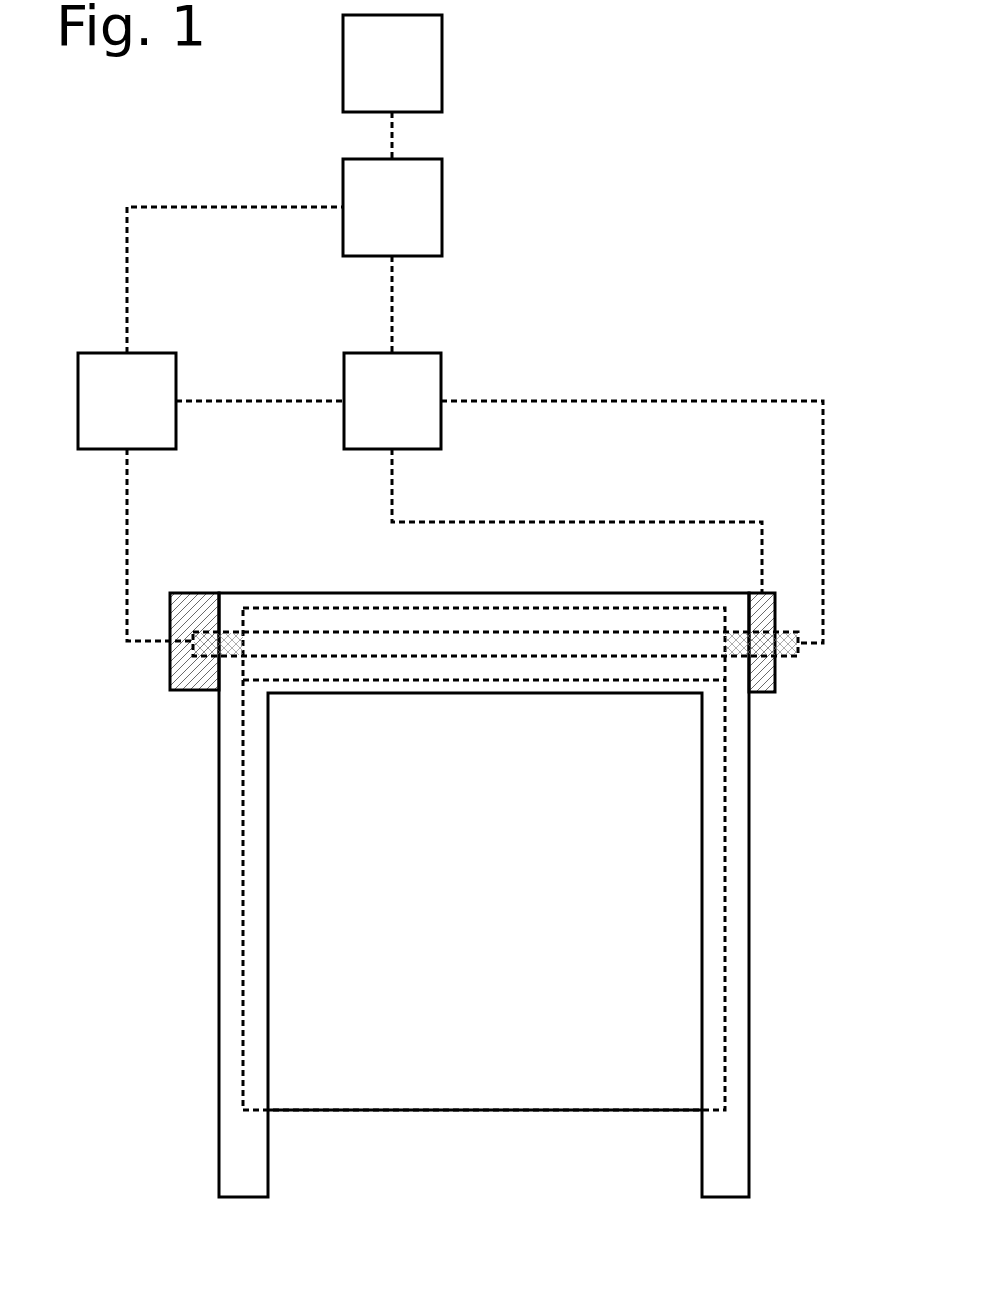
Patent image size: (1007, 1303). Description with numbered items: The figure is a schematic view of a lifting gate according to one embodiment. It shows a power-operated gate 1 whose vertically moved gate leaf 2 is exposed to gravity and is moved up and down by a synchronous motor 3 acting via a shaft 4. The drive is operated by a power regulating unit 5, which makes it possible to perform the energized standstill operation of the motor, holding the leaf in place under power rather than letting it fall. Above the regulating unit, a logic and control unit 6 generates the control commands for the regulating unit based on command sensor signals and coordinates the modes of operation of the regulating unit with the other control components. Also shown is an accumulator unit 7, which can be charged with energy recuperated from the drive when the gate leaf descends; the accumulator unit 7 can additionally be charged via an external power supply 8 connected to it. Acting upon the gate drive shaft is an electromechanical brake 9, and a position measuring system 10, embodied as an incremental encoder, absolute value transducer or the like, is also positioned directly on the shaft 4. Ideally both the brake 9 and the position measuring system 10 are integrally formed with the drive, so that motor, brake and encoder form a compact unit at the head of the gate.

The power-operated gate 1 is at (164, 1102).
The gate leaf 2 is at (537, 1099).
The synchronous motor 3 is at (193, 594).
The shaft 4 is at (435, 646).
The power regulating unit 5 is at (162, 434).
The logic and control unit 6 is at (430, 428).
The accumulator unit 7 is at (430, 238).
The external power supply 8 is at (430, 91).
The electromechanical brake 9 is at (758, 684).
The position measuring system 10 is at (788, 657).